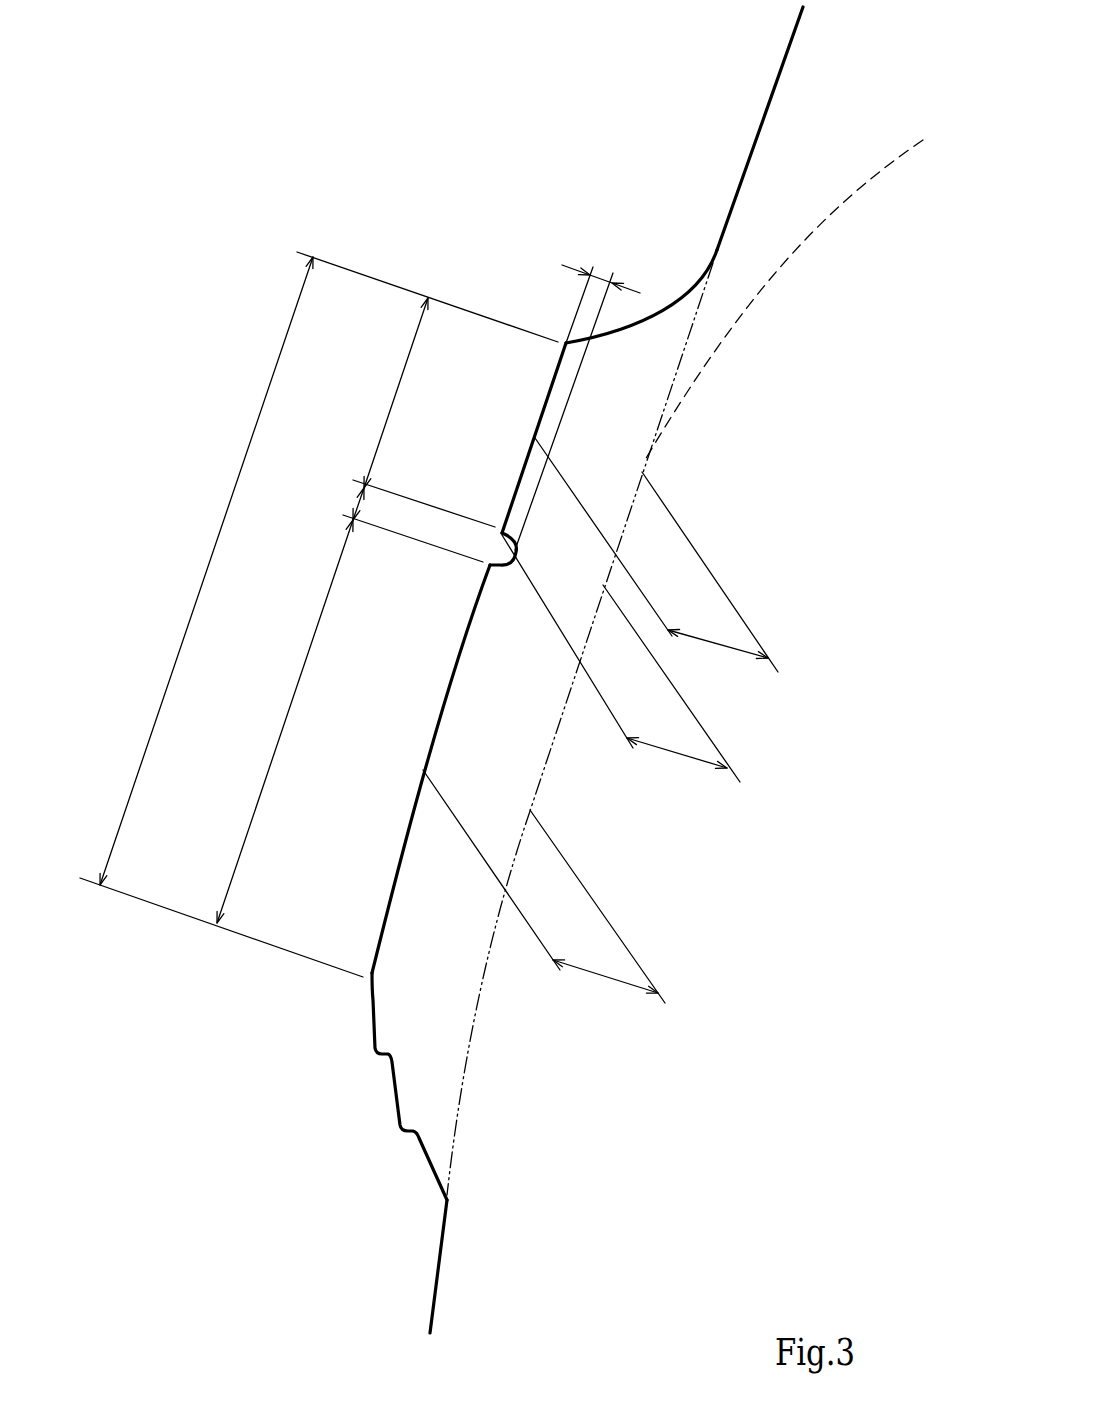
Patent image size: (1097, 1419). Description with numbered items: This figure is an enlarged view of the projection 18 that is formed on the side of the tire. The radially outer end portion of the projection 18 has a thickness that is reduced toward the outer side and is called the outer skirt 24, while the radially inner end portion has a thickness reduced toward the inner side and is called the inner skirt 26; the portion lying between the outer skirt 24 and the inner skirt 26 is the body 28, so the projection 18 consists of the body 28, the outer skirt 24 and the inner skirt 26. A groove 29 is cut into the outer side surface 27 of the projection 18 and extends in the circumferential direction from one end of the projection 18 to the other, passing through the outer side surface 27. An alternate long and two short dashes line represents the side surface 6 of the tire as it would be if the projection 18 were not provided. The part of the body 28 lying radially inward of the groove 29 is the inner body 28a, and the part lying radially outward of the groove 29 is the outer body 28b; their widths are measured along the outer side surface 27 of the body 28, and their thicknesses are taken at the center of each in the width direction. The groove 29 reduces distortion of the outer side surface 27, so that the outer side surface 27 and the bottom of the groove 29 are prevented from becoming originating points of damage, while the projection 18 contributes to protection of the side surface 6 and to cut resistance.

The side surface 6 is at (472, 1055).
The projection 18 is at (608, 152).
The outer skirt 24 is at (673, 303).
The inner skirt 26 is at (413, 1075).
The outer side surface 27 is at (400, 858).
The body 28 is at (520, 728).
The inner body 28a is at (462, 957).
The outer body 28b is at (628, 420).
The groove 29 is at (500, 533).